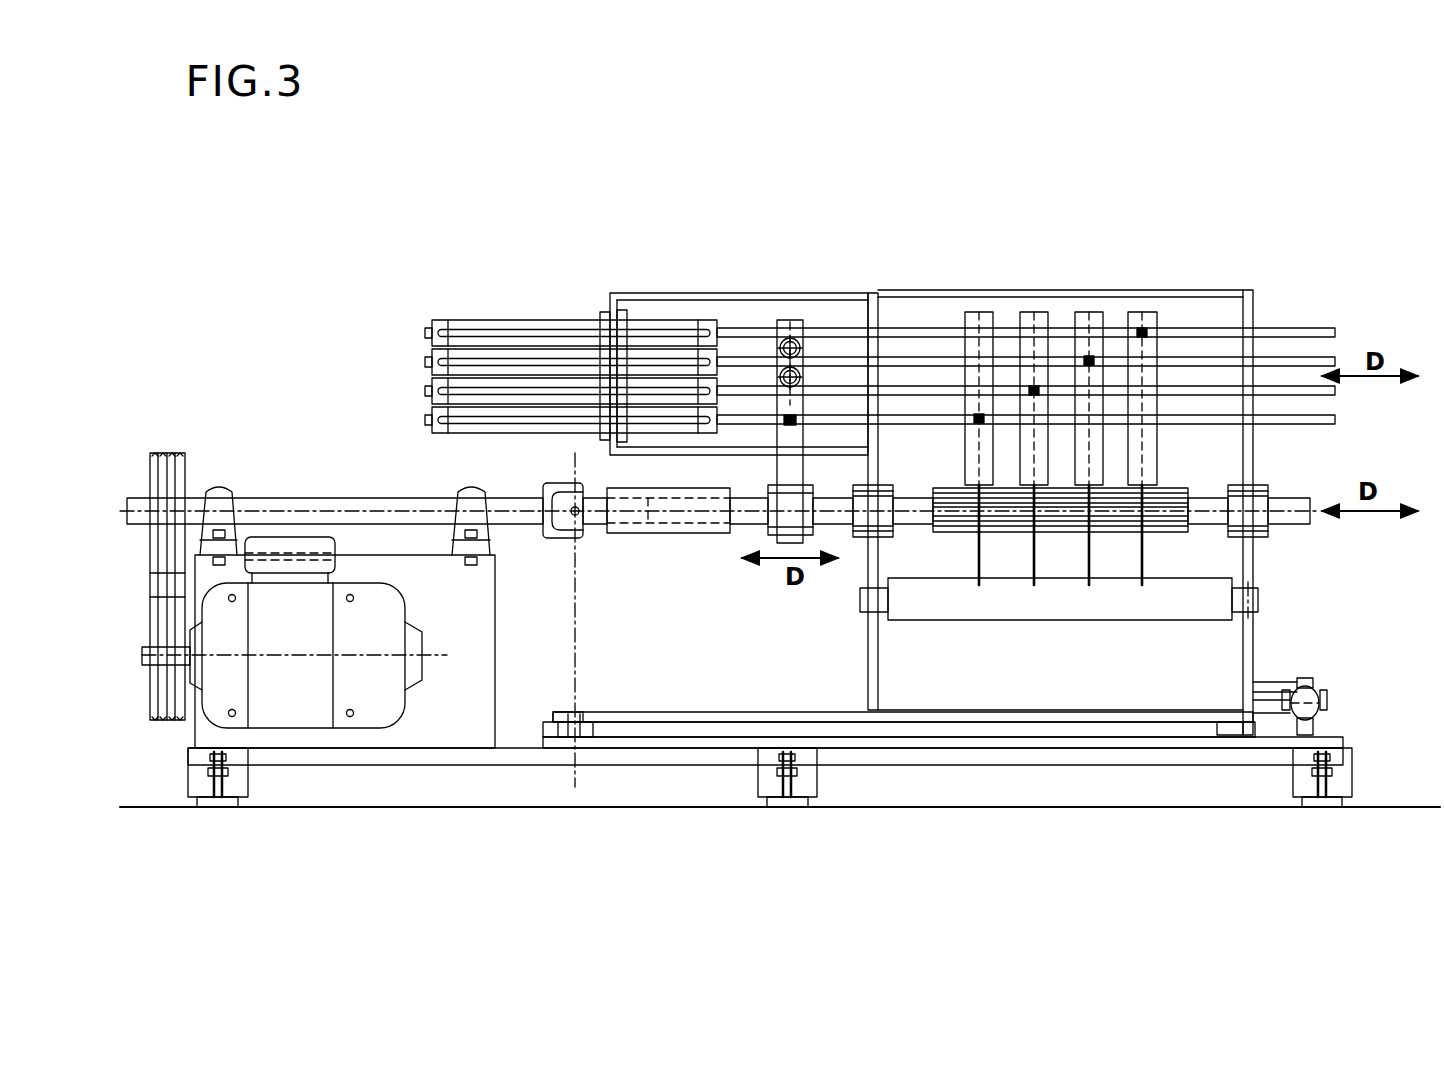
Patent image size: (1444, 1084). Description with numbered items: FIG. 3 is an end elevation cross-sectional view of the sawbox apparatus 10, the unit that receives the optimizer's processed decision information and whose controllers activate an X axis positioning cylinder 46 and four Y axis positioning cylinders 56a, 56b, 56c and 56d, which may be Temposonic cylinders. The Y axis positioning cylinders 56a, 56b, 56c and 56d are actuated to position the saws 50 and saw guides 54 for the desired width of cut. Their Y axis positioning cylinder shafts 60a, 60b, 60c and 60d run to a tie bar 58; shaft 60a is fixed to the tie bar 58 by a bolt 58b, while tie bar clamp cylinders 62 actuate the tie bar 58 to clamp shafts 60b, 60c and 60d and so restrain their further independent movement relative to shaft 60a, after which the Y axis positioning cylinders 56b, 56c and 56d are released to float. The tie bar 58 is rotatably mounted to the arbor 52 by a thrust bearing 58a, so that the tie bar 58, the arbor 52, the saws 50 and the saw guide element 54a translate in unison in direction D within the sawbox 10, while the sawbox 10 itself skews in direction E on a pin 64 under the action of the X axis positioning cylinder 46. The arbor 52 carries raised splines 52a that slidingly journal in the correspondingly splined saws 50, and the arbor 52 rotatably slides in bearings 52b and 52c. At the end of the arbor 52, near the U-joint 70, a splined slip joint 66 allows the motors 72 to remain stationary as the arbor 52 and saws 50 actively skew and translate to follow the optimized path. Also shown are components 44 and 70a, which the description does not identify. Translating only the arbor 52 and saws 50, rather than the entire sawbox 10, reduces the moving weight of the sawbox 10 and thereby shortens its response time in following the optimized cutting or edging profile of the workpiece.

The sawbox apparatus 10 is at (1075, 190).
The hydraulic cylinder 44 is at (897, 617).
The X axis positioning cylinder 46 is at (1315, 685).
The saws 50 is at (978, 557).
The arbor 52 is at (1290, 526).
The raised splines 52a is at (1175, 530).
The bearing 52b is at (1263, 487).
The bearing 52c is at (885, 538).
The saw guides 54 is at (968, 413).
The saw guide element 54a is at (978, 313).
The Y axis positioning cylinder 56a is at (428, 422).
The Y axis positioning cylinder 56b is at (430, 390).
The Y axis positioning cylinder 56c is at (428, 355).
The Y axis positioning cylinder 56d is at (427, 330).
The tie bar 58 is at (788, 545).
The thrust bearing 58a is at (767, 518).
The bolt 58b is at (798, 420).
The Y axis positioning cylinder shaft 60a is at (1337, 423).
The Y axis positioning cylinder shaft 60b is at (1337, 395).
The Y axis positioning cylinder shaft 60c is at (1337, 357).
The Y axis positioning cylinder shaft 60d is at (1295, 327).
The tie bar clamp cylinders 62 is at (780, 343).
The pin 64 is at (575, 757).
The splined slip joint 66 is at (667, 535).
The U-joint 70 is at (548, 542).
The motor drive shaft 70a is at (343, 498).
The motors 72 is at (268, 703).